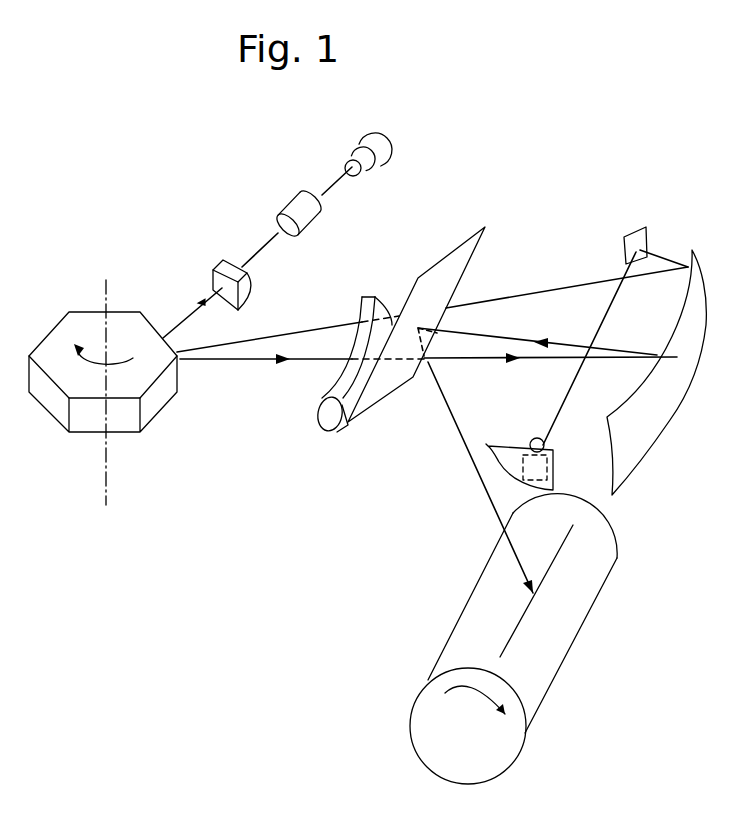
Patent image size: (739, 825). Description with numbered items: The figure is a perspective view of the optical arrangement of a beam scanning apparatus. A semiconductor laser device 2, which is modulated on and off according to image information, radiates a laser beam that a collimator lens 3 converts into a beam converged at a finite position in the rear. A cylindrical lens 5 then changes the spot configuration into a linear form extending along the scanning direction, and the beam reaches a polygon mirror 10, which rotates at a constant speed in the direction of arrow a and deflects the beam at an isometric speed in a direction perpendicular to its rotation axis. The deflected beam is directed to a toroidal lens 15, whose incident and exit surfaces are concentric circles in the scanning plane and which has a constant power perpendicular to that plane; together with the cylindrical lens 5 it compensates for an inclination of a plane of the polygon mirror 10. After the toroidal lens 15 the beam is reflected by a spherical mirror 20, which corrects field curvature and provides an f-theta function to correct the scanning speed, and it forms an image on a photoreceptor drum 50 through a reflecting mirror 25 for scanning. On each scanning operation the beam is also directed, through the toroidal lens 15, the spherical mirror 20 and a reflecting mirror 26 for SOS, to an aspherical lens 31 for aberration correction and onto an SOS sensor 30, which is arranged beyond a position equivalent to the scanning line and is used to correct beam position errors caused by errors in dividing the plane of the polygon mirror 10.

The semiconductor laser device 2 is at (360, 130).
The collimator lens 3 is at (288, 195).
The cylindrical lens 5 is at (220, 260).
The polygon mirror 10 is at (53, 415).
The toroidal lens 15 is at (330, 435).
The spherical mirror 20 is at (672, 323).
The reflecting mirror for scanning 25 is at (477, 255).
The reflecting mirror for SOS 26 is at (637, 227).
The SOS sensor 30 is at (512, 452).
The aspherical lens 31 is at (537, 438).
The photoreceptor drum 50 is at (577, 643).